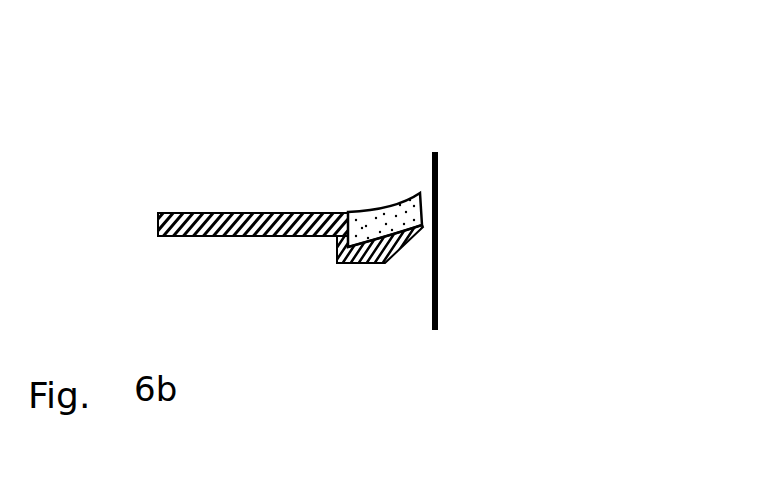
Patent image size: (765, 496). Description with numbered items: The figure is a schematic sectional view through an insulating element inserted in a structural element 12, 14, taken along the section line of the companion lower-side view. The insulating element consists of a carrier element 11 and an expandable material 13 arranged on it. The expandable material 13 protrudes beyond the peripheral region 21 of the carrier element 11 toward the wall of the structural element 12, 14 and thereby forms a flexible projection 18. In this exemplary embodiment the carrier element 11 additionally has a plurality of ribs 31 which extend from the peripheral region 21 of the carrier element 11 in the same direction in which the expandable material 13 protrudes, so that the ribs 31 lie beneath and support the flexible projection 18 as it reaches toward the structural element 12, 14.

The carrier element 11 is at (188, 236).
The structural element 12 is at (501, 254).
The structural element 14 is at (438, 309).
The expandable material 13 is at (377, 147).
The flexible projection 18 is at (400, 195).
The peripheral region 21 is at (381, 316).
The ribs 31 is at (395, 262).